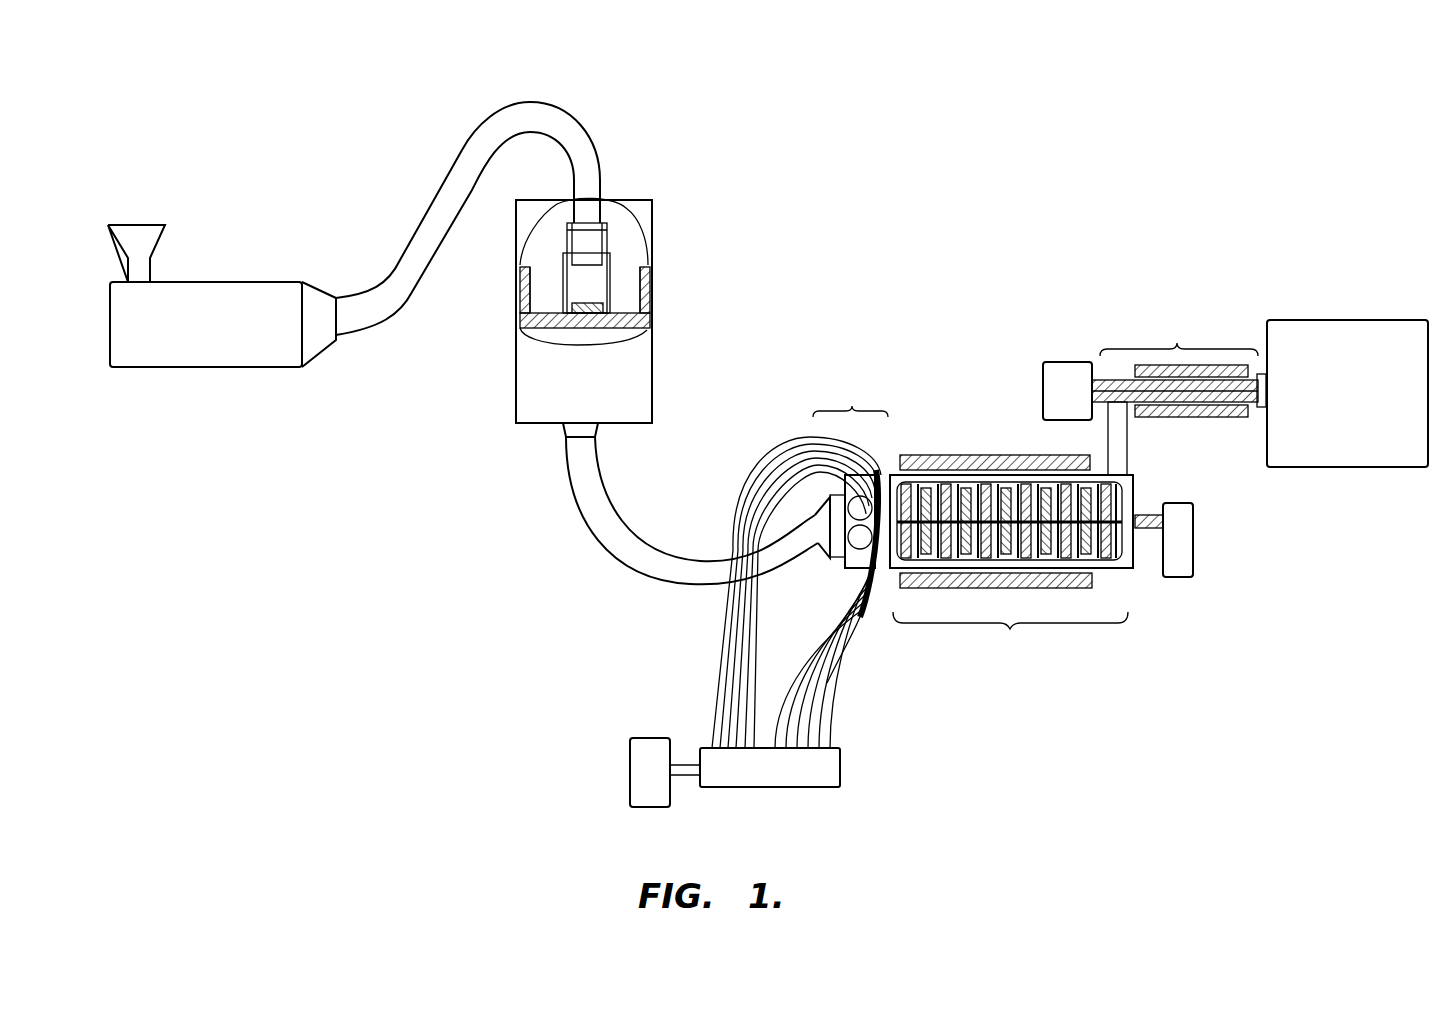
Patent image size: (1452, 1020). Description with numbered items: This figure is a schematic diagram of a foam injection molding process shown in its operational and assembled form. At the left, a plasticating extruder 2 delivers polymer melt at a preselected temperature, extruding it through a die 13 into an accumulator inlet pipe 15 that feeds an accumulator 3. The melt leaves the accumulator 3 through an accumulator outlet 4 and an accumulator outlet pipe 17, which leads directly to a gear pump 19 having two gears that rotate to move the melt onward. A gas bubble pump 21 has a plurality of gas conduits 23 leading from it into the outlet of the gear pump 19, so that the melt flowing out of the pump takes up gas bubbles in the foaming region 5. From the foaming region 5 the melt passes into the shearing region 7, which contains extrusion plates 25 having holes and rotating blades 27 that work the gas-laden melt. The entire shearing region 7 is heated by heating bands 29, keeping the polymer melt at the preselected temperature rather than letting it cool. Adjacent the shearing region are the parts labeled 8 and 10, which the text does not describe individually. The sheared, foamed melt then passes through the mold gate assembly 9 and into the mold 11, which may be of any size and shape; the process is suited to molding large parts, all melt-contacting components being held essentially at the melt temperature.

The plasticating extruder 2 is at (217, 282).
The die 13 is at (327, 347).
The accumulator inlet pipe 15 is at (482, 108).
The accumulator 3 is at (648, 285).
The accumulator outlet 4 is at (600, 428).
The accumulator outlet pipe 17 is at (624, 531).
The gear pump 19 is at (845, 572).
The foaming region 5 is at (850, 496).
The gas conduits 23 is at (722, 676).
The gas bubble pump 21 is at (722, 788).
The shearing region 7 is at (1011, 534).
The extrusion plates 25 is at (913, 490).
The rotating blades 27 is at (966, 490).
The heating bands 29 is at (1053, 582).
The adjusting screw 8 is at (1143, 513).
The handle 10 is at (1193, 548).
The mold gate assembly 9 is at (1154, 363).
The mold 11 is at (1343, 320).